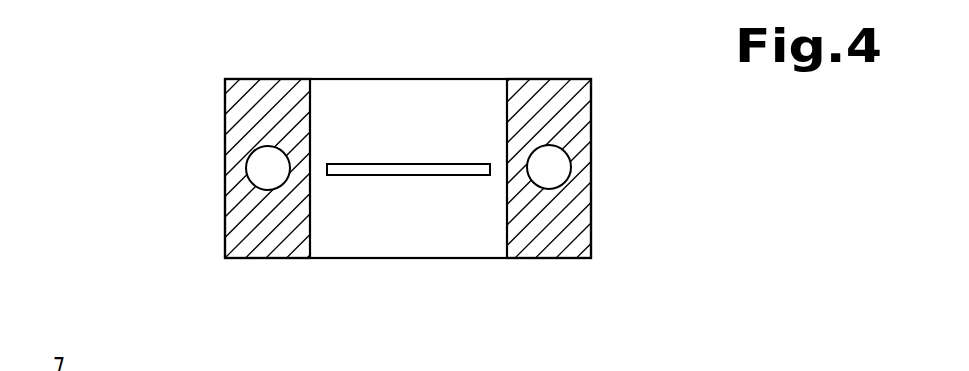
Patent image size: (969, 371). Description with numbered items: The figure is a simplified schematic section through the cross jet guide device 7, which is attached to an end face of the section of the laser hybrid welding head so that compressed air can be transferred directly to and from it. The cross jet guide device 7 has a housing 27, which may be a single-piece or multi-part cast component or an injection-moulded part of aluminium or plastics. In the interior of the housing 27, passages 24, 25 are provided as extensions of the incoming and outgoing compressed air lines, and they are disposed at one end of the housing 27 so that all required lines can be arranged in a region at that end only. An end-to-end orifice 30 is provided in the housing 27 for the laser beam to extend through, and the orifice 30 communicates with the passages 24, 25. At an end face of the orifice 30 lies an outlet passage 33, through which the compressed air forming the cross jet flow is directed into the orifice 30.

The cross jet guide device 7 is at (178, 78).
The passage 24 is at (545, 169).
The passage 25 is at (262, 170).
The housing 27 is at (562, 228).
The orifice 30 is at (312, 220).
The outlet passage 33 is at (407, 163).